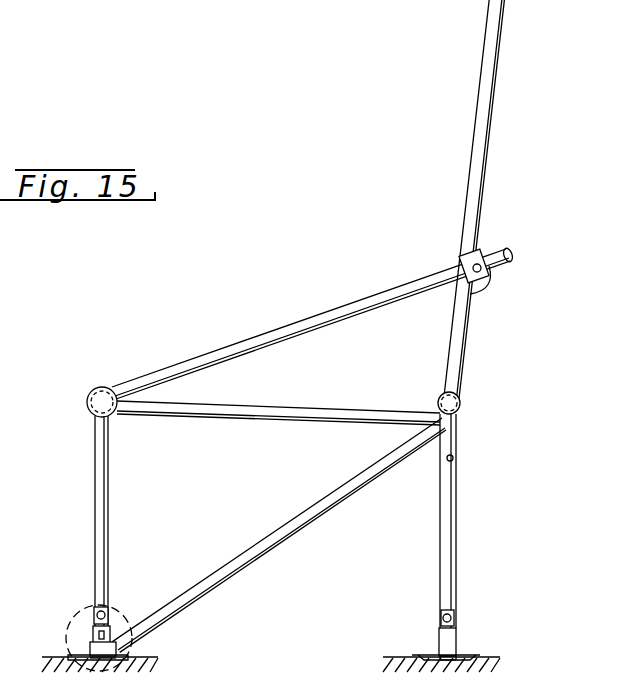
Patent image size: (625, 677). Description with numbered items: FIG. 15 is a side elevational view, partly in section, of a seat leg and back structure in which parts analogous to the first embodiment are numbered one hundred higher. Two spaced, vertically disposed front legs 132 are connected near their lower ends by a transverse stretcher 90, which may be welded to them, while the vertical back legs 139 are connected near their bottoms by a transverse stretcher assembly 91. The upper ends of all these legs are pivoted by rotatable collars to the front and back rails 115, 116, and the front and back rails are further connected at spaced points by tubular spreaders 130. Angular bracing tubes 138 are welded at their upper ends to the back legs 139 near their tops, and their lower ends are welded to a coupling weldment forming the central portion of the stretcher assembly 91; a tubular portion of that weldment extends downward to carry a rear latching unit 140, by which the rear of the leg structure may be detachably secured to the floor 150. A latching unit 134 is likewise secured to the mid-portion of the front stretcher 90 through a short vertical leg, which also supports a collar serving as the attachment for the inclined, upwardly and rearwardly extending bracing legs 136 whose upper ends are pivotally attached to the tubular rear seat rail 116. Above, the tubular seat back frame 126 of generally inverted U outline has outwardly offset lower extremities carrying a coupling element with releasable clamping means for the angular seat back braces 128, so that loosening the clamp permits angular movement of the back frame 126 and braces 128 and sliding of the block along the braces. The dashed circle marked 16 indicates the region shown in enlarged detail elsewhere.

The detail view circle (Fig. 16) 16 is at (122, 612).
The transverse stretcher 90 is at (93, 612).
The transverse stretcher assembly 91 is at (456, 616).
The front rail 115 is at (87, 402).
The back rail 116 is at (461, 398).
The tubular seat back frame 126 is at (491, 46).
The angular seat back brace 128 is at (346, 286).
The tubular spreader 130 is at (298, 392).
The front leg 132 is at (108, 470).
The latching unit 134 is at (91, 636).
The inclined bracing leg 136 is at (270, 548).
The angular bracing tube 138 is at (456, 524).
The back leg 139 is at (455, 459).
The rear latching unit 140 is at (459, 641).
The floor 150 is at (158, 656).